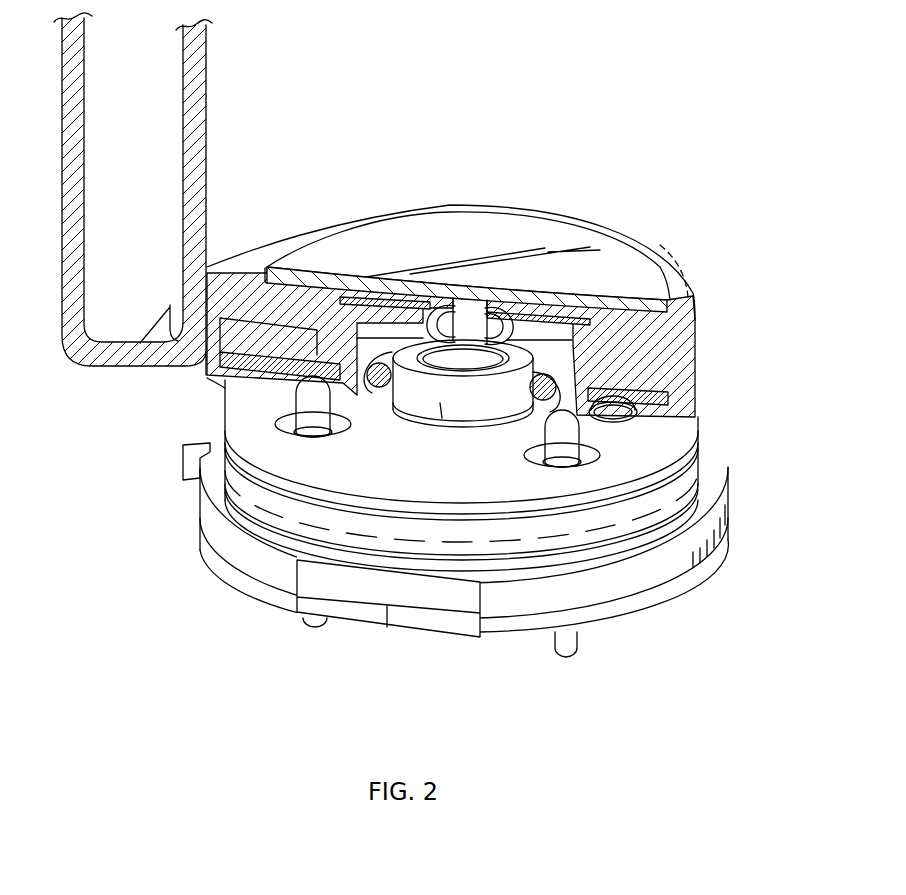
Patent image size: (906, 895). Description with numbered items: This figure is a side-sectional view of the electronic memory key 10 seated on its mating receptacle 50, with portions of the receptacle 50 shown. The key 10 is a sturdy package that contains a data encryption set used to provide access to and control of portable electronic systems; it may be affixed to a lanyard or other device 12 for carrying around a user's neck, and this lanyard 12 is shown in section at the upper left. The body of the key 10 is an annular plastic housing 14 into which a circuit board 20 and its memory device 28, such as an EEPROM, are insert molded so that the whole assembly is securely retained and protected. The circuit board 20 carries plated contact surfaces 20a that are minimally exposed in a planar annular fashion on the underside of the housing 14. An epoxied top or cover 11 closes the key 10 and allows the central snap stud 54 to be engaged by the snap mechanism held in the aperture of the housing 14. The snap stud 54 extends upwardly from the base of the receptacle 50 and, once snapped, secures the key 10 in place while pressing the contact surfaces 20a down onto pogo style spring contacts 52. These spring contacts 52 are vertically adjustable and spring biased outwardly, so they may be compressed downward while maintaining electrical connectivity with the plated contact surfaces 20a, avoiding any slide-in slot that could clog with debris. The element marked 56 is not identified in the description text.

The electronic memory key 10 is at (692, 230).
The top or cover 11 is at (474, 220).
The lanyard or other device 12 is at (200, 123).
The annular plastic housing 14 is at (681, 358).
The circuit board 20 is at (670, 397).
The plated contact surfaces 20a is at (652, 422).
The memory device 28 is at (254, 335).
The mating receptacle 50 is at (668, 627).
The spring contacts 52 is at (307, 398).
The snap stud 54 is at (440, 403).
The terminal pins 56 is at (305, 620).